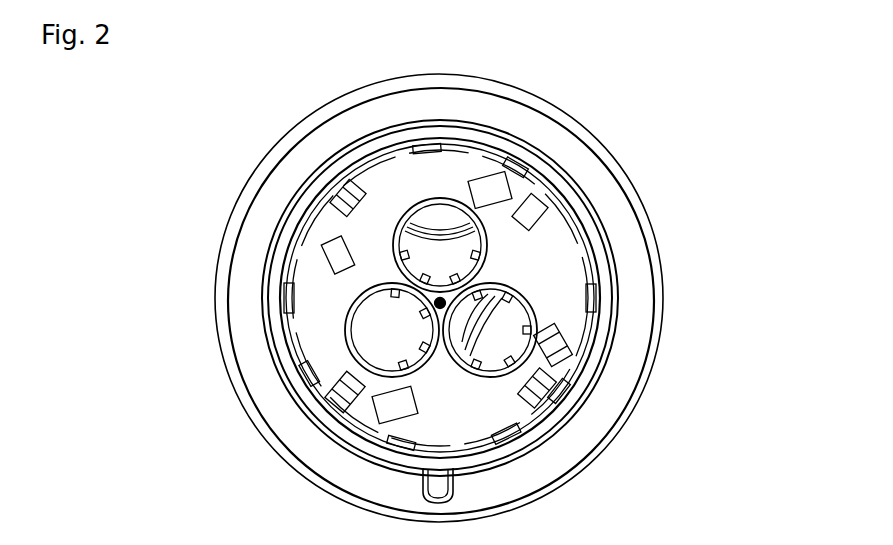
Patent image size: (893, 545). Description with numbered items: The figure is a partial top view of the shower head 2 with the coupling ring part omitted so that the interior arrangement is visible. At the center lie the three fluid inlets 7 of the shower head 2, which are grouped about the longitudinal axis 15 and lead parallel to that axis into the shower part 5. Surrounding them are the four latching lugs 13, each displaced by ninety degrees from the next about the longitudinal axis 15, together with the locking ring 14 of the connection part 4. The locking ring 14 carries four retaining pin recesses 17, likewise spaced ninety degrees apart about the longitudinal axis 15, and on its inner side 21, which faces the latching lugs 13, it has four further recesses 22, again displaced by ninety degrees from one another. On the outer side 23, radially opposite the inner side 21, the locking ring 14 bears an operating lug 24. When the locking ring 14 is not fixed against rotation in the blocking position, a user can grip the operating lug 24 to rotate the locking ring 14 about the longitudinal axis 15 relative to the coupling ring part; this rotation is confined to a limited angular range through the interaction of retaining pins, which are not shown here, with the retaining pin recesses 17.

The shower head 2 is at (482, 294).
The connection part 4 is at (400, 142).
The shower part 5 is at (441, 175).
The fluid inlets 7 is at (395, 325).
The latching lugs 13 is at (345, 200).
The locking ring 14 is at (290, 222).
The longitudinal axis 15 is at (440, 302).
The retaining pin recesses 17 is at (598, 313).
The inner side 21 is at (566, 380).
The recesses 22 is at (510, 440).
The outer side 23 is at (307, 420).
The operating lug 24 is at (437, 500).